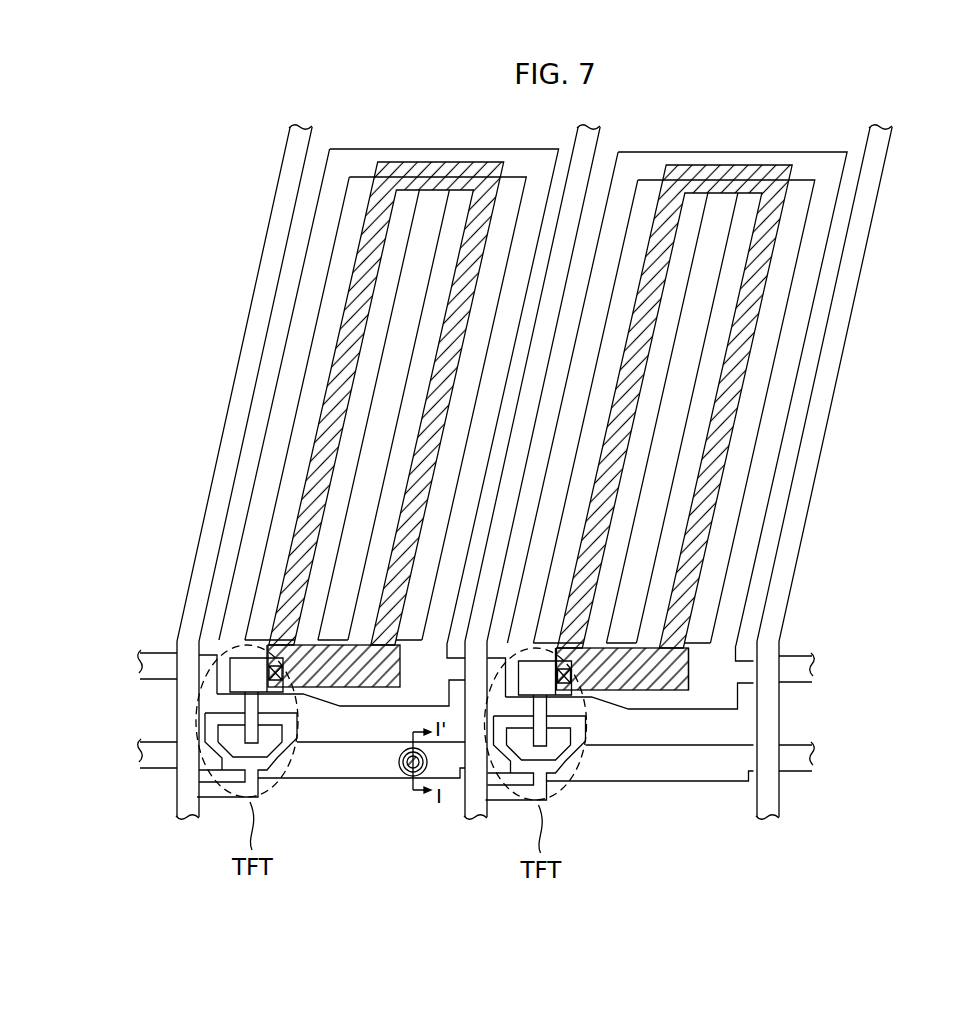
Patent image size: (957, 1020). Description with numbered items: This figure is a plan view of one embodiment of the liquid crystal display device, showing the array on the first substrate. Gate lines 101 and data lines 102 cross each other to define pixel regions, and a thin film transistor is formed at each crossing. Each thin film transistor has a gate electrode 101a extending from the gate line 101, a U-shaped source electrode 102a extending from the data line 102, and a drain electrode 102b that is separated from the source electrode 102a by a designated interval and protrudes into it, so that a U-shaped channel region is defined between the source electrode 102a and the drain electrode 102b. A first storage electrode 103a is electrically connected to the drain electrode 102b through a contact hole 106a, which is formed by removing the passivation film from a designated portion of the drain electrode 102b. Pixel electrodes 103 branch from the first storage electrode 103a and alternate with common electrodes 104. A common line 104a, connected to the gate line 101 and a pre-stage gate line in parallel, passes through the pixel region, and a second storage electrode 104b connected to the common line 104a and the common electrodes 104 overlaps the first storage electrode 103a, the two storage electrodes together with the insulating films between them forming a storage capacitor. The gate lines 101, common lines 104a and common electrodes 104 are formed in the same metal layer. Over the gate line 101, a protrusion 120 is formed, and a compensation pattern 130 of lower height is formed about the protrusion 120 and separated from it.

The gate line 101 is at (318, 768).
The gate electrode 101a is at (199, 728).
The data line 102 is at (188, 701).
The source electrode 102a is at (280, 783).
The drain electrode 102b is at (260, 700).
The pixel electrode 103 is at (760, 327).
The first storage electrode 103a is at (690, 667).
The common electrode 104 is at (730, 228).
The common line 104a is at (752, 684).
The second storage electrode 104b is at (728, 708).
The contact hole 106a is at (285, 672).
The protrusion 120 is at (405, 777).
The compensation pattern 130 is at (426, 768).